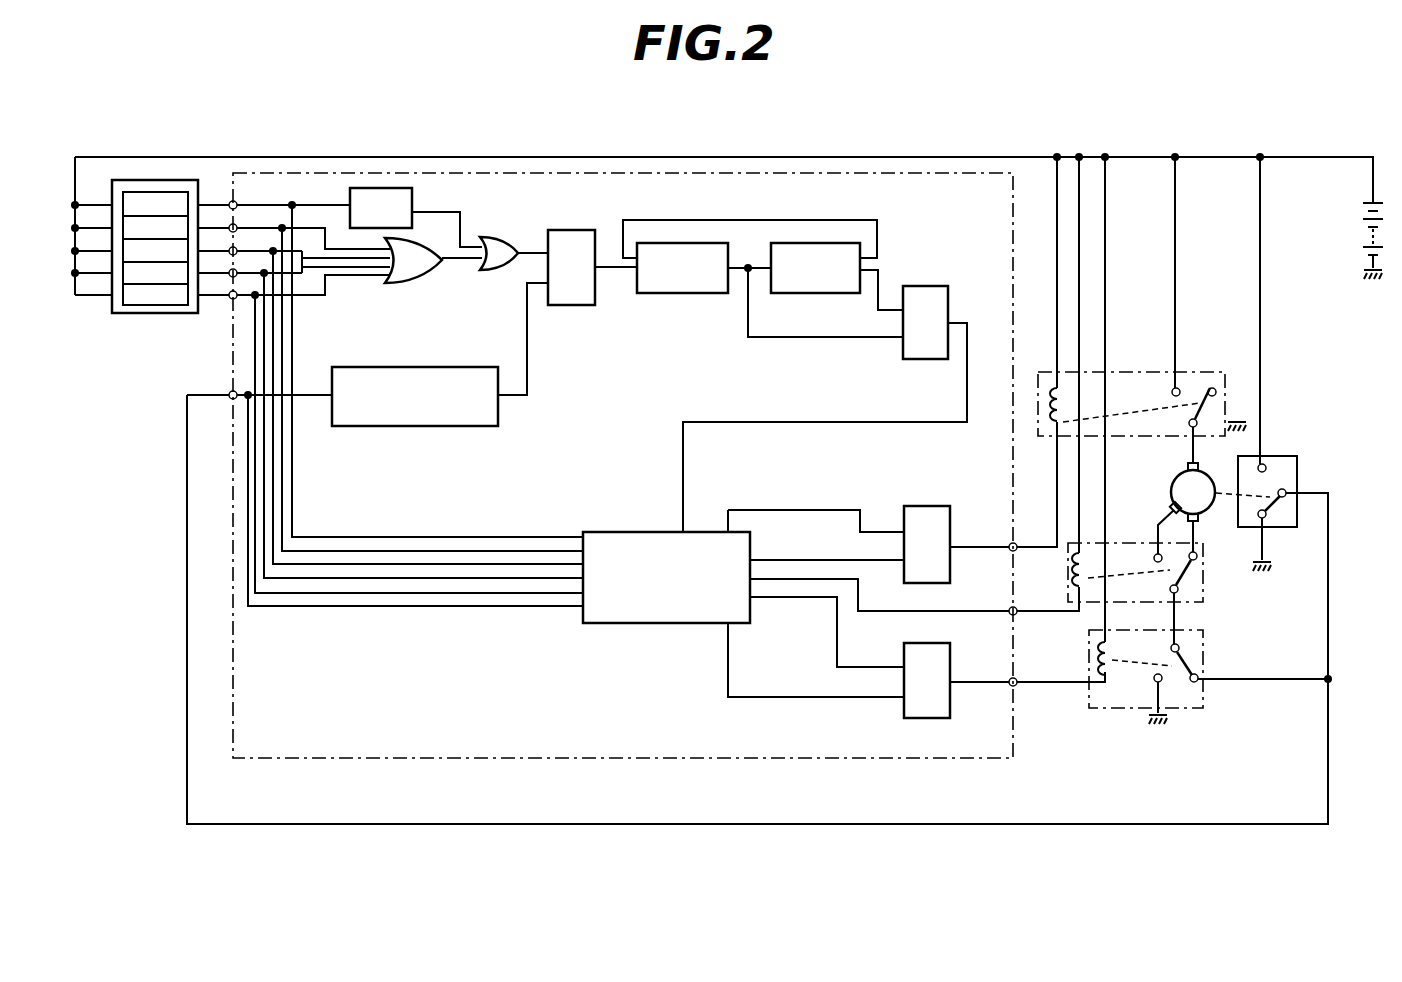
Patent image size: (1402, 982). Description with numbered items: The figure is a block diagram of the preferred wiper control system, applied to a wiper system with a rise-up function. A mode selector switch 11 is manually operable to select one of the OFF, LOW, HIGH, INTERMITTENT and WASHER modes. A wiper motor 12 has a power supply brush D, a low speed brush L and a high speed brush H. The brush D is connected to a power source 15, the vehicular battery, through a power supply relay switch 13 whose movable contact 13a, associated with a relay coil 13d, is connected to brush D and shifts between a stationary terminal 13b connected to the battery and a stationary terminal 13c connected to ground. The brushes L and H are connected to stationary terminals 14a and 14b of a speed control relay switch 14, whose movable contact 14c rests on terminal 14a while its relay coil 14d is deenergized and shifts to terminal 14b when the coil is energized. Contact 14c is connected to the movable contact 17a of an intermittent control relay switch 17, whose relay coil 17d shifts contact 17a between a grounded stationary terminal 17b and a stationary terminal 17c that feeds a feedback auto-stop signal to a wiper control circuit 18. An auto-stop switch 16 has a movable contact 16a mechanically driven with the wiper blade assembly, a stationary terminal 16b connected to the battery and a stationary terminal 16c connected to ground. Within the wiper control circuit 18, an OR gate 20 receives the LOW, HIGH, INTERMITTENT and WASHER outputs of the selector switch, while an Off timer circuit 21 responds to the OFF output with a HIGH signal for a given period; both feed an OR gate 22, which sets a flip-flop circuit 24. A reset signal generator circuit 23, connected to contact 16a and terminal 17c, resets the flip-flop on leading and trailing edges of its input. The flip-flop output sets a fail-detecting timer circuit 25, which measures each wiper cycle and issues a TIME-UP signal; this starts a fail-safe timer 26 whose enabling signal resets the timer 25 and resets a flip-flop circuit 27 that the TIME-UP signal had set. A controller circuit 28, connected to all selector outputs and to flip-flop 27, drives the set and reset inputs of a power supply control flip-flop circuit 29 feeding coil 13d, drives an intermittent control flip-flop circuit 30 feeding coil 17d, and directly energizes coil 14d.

The mode selector switch 11 is at (148, 315).
The wiper motor 12 is at (1178, 474).
The power supply relay switch 13 is at (1162, 360).
The movable contact 13a is at (1197, 385).
The stationary terminal 13b is at (1178, 386).
The stationary terminal 13c is at (1228, 378).
The relay coil 13d is at (1045, 372).
The speed control relay switch 14 is at (1145, 582).
The stationary terminal 14a is at (1197, 558).
The stationary terminal 14b is at (1158, 553).
The movable contact 14c is at (1180, 592).
The relay coil 14d is at (1073, 575).
The power source 15 is at (1365, 240).
The auto-stop switch 16 is at (1300, 488).
The movable contact 16a is at (1286, 488).
The stationary terminal 16b is at (1264, 462).
The stationary terminal 16c is at (1264, 520).
The intermittent control relay switch 17 is at (1148, 701).
The movable contact 17a is at (1182, 672).
The stationary terminal 17b is at (1157, 683).
The stationary terminal 17c is at (1198, 683).
The relay coil 17d is at (1092, 660).
The wiper control circuit 18 is at (977, 762).
The OR gate 20 is at (433, 272).
The Off timer circuit 21 is at (358, 188).
The OR gate 22 is at (528, 225).
The reset signal generator circuit 23 is at (333, 427).
The flip-flop circuit 24 is at (563, 305).
The fail-detecting timer circuit 25 is at (653, 243).
The fail-safe timer 26 is at (810, 243).
The flip-flop circuit 27 is at (922, 286).
The controller circuit 28 is at (628, 623).
The power supply control flip-flop circuit 29 is at (922, 506).
The intermittent control flip-flop circuit 30 is at (950, 700).